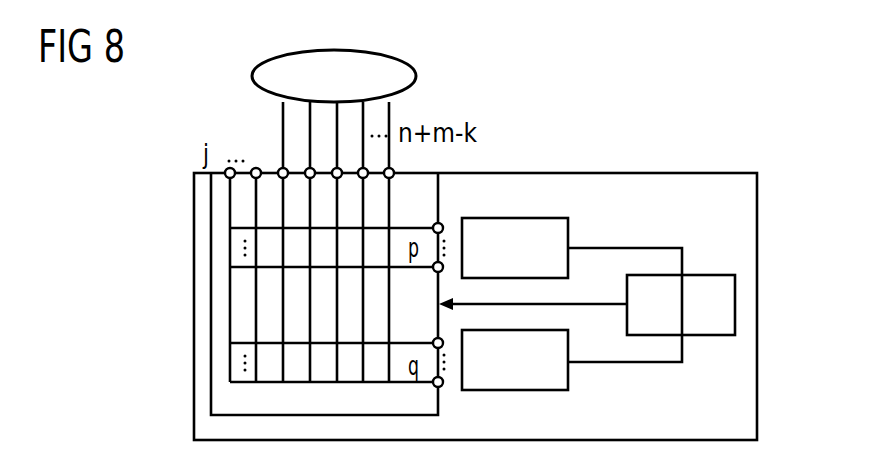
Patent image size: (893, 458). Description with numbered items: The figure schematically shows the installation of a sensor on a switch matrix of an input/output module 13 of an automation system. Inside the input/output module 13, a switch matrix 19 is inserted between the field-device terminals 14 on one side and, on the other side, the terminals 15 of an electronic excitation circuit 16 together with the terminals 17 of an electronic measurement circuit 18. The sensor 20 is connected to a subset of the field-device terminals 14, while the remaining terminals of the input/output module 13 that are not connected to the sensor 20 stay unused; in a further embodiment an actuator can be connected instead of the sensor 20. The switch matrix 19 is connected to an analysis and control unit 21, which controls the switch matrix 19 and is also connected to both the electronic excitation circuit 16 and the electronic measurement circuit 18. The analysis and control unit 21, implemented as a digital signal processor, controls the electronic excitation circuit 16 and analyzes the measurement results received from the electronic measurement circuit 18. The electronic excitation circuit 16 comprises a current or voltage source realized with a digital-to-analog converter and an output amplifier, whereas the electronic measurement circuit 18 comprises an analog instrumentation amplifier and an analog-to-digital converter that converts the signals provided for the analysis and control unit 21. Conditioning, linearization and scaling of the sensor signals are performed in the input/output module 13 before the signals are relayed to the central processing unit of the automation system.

The input/output module 13 is at (632, 173).
The field-device terminals 14 is at (307, 170).
The terminals of the electronic excitation circuit 15 is at (443, 347).
The electronic excitation circuit 16 is at (503, 390).
The terminals of the electronic measurement circuit 17 is at (443, 264).
The electronic measurement circuit 18 is at (508, 218).
The switch matrix 19 is at (212, 294).
The sensor 20 is at (416, 77).
The analysis and control unit 21 is at (703, 275).